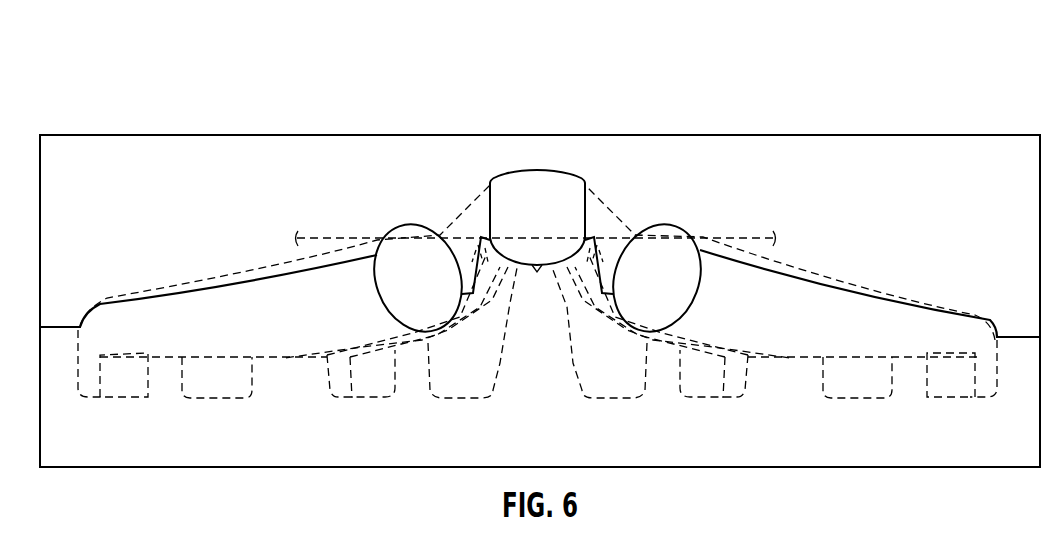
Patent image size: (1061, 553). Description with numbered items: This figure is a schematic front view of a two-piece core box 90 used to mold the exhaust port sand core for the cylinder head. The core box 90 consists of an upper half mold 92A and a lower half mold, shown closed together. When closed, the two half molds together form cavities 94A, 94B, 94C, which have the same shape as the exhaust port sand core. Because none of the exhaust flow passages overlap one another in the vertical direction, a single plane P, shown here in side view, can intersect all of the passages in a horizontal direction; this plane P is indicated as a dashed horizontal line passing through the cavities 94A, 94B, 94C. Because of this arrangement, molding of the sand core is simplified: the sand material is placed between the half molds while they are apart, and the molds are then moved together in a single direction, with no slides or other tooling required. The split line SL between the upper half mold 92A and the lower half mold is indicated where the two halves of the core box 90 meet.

The two-piece core box 90 is at (845, 107).
The upper half mold 92A is at (101, 133).
The cavity 94A is at (412, 267).
The cavity 94B is at (547, 202).
The cavity 94C is at (660, 267).
The split line SL is at (600, 284).
The plane P is at (758, 236).